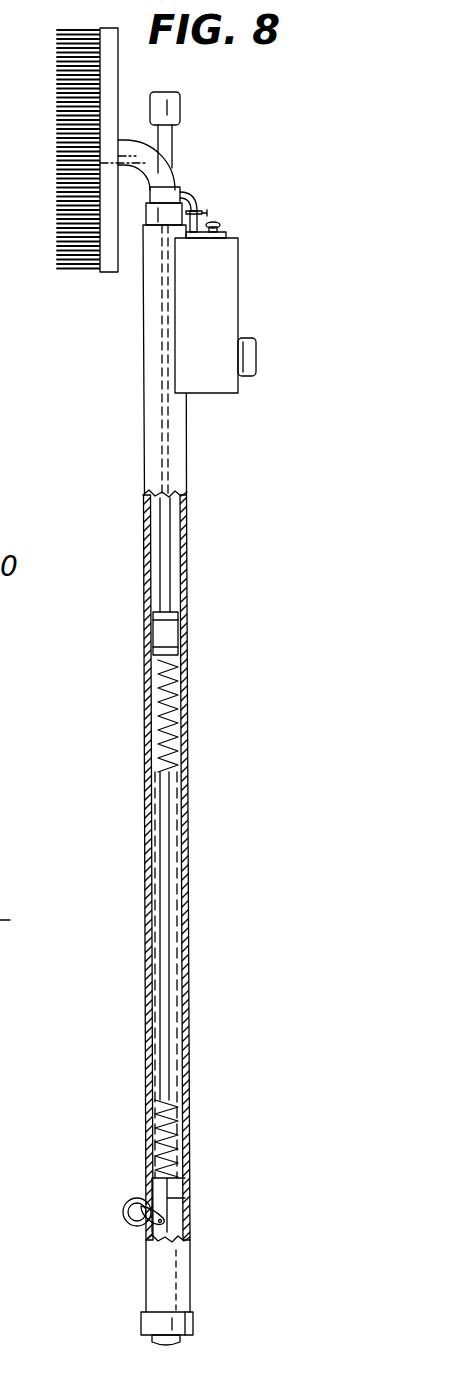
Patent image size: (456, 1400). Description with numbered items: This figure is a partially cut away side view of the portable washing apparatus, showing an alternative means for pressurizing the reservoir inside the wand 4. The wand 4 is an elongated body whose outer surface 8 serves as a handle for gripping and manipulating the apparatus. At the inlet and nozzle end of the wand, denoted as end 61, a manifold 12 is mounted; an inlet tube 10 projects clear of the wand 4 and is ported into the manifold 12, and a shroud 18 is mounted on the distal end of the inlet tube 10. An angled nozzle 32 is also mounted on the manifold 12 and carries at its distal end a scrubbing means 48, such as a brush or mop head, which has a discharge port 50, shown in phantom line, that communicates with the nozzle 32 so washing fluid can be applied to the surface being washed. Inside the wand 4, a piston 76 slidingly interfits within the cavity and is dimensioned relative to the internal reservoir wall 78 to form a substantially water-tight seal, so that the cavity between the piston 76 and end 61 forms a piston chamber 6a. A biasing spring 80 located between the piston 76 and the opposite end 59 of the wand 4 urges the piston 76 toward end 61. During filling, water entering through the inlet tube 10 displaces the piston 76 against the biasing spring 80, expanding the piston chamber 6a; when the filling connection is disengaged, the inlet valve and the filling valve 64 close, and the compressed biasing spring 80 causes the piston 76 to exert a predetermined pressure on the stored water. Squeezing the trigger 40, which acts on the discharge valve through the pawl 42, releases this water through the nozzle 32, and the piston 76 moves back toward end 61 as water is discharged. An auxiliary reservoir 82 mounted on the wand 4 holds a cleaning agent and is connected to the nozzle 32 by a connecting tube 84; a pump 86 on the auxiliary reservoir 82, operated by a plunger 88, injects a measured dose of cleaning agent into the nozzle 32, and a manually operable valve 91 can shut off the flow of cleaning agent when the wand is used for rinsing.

The portable wand 4 is at (188, 508).
The piston chamber 6a is at (172, 582).
The outer surface 8 is at (188, 825).
The inlet tube 10 is at (172, 132).
The manifold 12 is at (176, 213).
The shroud 18 is at (178, 100).
The nozzle 32 is at (160, 170).
The trigger 40 is at (135, 1222).
The pawl 42 is at (175, 1200).
The scrubbing means 48 is at (100, 270).
The discharge port 50 is at (103, 156).
The end of wand 59 is at (140, 1320).
The wand end 61 is at (240, 223).
The filling valve 64 is at (29, 922).
The piston 76 is at (165, 640).
The internal reservoir wall 78 is at (147, 560).
The biasing spring 80 is at (165, 745).
The auxiliary reservoir 82 is at (220, 372).
The connecting tube 84 is at (192, 196).
The pump 86 is at (215, 240).
The plunger 88 is at (218, 228).
The manually operable valve 91 is at (205, 209).